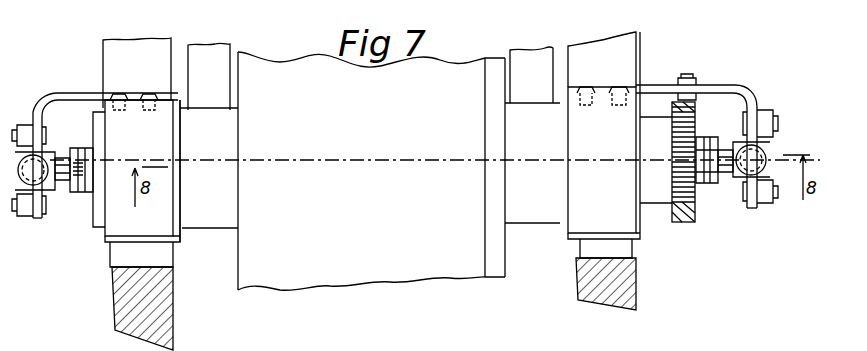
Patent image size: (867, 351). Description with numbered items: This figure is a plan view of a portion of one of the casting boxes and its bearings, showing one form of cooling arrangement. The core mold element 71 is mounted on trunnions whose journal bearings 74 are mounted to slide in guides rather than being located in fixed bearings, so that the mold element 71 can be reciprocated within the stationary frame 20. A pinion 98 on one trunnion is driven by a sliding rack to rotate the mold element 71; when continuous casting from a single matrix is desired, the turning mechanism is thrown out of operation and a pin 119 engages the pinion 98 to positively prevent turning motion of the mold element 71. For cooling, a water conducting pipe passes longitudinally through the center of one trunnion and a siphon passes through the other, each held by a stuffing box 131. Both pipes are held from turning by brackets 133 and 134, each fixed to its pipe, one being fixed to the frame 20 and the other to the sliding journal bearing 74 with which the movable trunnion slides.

The stationary frame 20 is at (174, 330).
The mold element 71 is at (449, 171).
The journal bearings 74 is at (180, 243).
The pinion 98 is at (687, 224).
The pin 119 is at (686, 75).
The stuffing box 131 is at (78, 194).
The bracket 133 is at (72, 81).
The bracket 134 is at (737, 92).